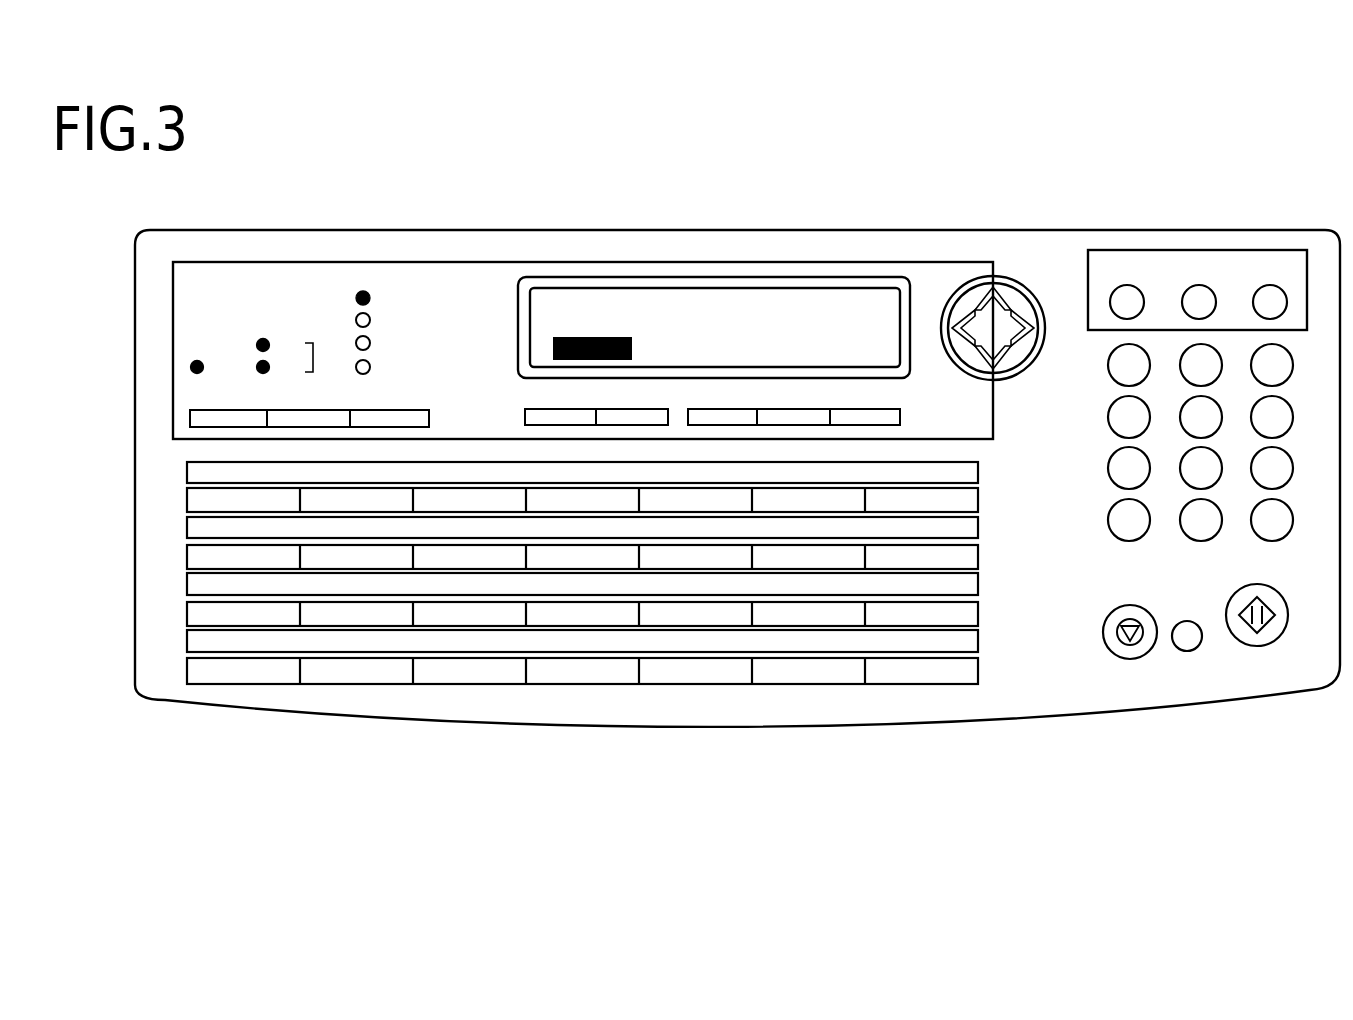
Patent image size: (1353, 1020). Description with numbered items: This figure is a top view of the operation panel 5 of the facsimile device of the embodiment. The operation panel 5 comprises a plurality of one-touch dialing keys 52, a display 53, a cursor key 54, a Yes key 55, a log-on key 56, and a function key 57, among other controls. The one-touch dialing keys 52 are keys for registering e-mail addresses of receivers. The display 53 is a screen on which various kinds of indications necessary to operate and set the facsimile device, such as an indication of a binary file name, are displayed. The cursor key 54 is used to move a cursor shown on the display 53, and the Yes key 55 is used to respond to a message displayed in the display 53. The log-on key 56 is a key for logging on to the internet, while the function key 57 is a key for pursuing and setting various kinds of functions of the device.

The operation panel 5 is at (737, 478).
The one-touch dialing keys 52 is at (515, 685).
The display 53 is at (752, 293).
The cursor key 54 is at (952, 292).
The Yes key 55 is at (508, 405).
The log-on key 56 is at (1190, 650).
The function key 57 is at (924, 405).